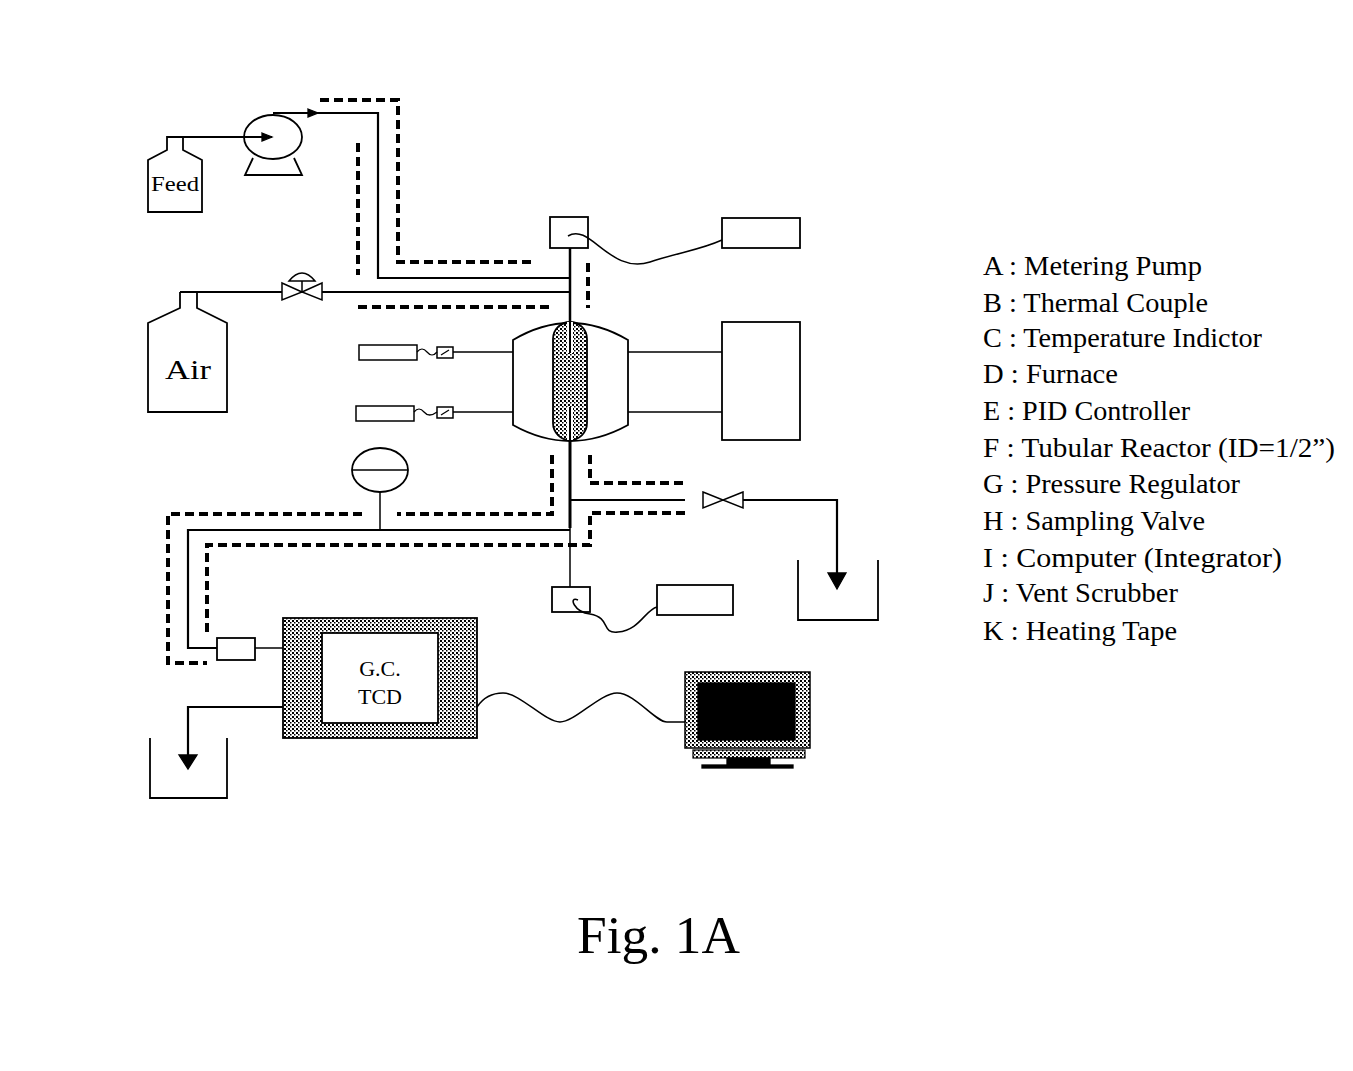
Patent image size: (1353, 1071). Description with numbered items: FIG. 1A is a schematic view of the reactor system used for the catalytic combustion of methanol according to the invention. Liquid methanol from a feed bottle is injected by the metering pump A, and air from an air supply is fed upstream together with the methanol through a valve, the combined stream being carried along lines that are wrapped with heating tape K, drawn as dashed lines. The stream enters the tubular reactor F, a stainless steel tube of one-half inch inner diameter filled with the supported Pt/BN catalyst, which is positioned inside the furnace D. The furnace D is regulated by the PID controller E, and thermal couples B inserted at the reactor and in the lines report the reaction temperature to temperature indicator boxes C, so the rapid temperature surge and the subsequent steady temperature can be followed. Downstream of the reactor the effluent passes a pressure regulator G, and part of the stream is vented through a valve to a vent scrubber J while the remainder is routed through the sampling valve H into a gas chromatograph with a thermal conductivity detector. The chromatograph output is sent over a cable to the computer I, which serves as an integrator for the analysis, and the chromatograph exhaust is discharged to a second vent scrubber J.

The metering pump A is at (407, 177).
The thermal couple B is at (513, 417).
The temperature indicator C is at (578, 411).
The furnace D is at (570, 382).
The PID controller E is at (731, 381).
The tubular reactor F is at (587, 340).
The pressure regulator G is at (363, 481).
The sampling valve H is at (250, 634).
The computer (integrator) I is at (768, 720).
The vent scrubber J is at (510, 679).
The heating tape K is at (426, 381).